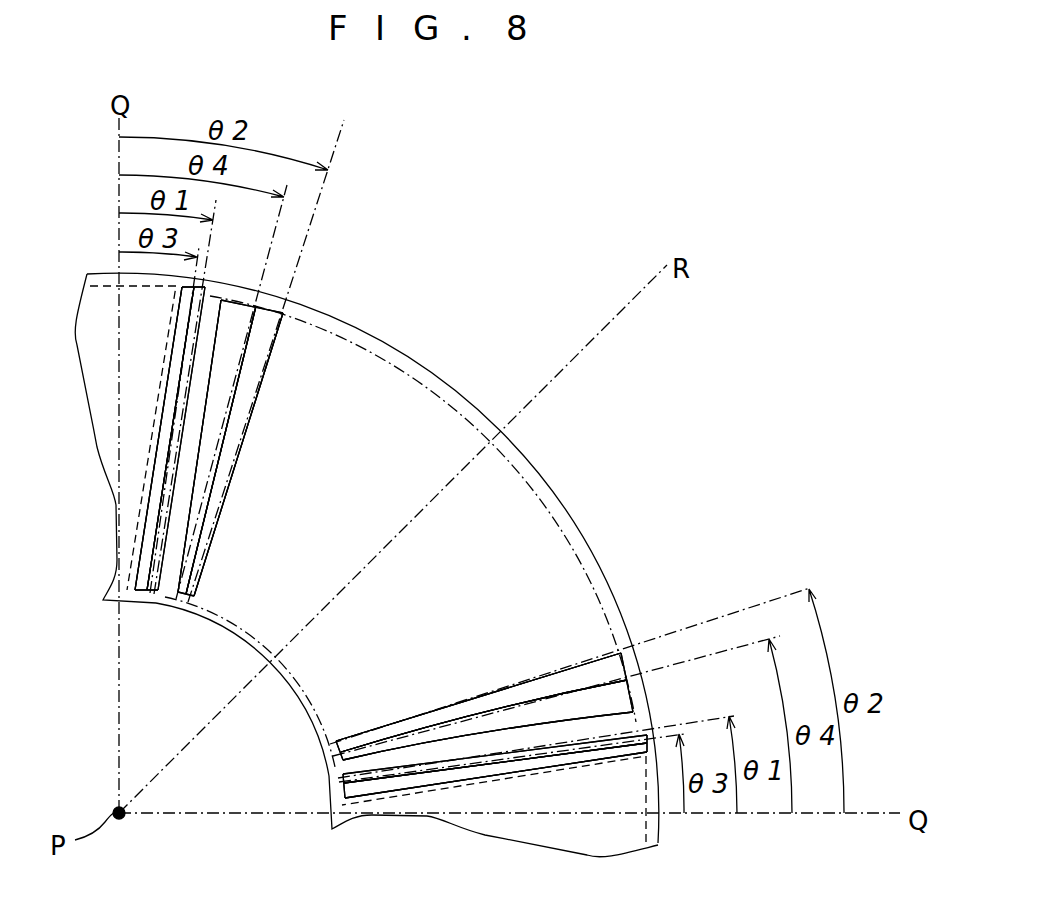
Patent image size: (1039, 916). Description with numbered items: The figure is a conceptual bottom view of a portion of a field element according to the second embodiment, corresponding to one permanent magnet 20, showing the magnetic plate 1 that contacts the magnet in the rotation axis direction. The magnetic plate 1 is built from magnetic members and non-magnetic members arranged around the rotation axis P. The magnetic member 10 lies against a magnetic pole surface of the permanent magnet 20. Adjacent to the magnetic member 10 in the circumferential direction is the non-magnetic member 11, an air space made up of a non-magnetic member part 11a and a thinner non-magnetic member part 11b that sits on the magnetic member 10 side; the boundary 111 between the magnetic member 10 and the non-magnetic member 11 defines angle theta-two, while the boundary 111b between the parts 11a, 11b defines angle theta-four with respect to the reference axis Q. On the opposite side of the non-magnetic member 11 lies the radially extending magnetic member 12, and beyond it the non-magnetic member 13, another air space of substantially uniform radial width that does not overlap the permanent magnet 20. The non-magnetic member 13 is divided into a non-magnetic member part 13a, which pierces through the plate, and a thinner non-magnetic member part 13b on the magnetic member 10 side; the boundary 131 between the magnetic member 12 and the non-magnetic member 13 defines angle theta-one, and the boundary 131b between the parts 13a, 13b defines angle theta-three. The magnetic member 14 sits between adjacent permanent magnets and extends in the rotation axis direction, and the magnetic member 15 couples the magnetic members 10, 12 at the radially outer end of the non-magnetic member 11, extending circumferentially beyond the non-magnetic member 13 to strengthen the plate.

The magnetic plate 1 is at (490, 400).
The magnetic member 10 is at (415, 392).
The permanent magnet 20 is at (517, 512).
The non-magnetic member 11 is at (352, 362).
The non-magnetic member part 11a is at (228, 392).
The non-magnetic member part 11b is at (258, 369).
The boundary 111 is at (260, 440).
The boundary 111b is at (237, 468).
The magnetic member 12 is at (180, 574).
The non-magnetic member 13 is at (217, 657).
The non-magnetic member part 13a is at (148, 598).
The non-magnetic member part 13b is at (155, 602).
The boundary 131 is at (389, 791).
The boundary 131b is at (434, 800).
The magnetic member 14 is at (105, 403).
The magnetic member 15 is at (281, 296).